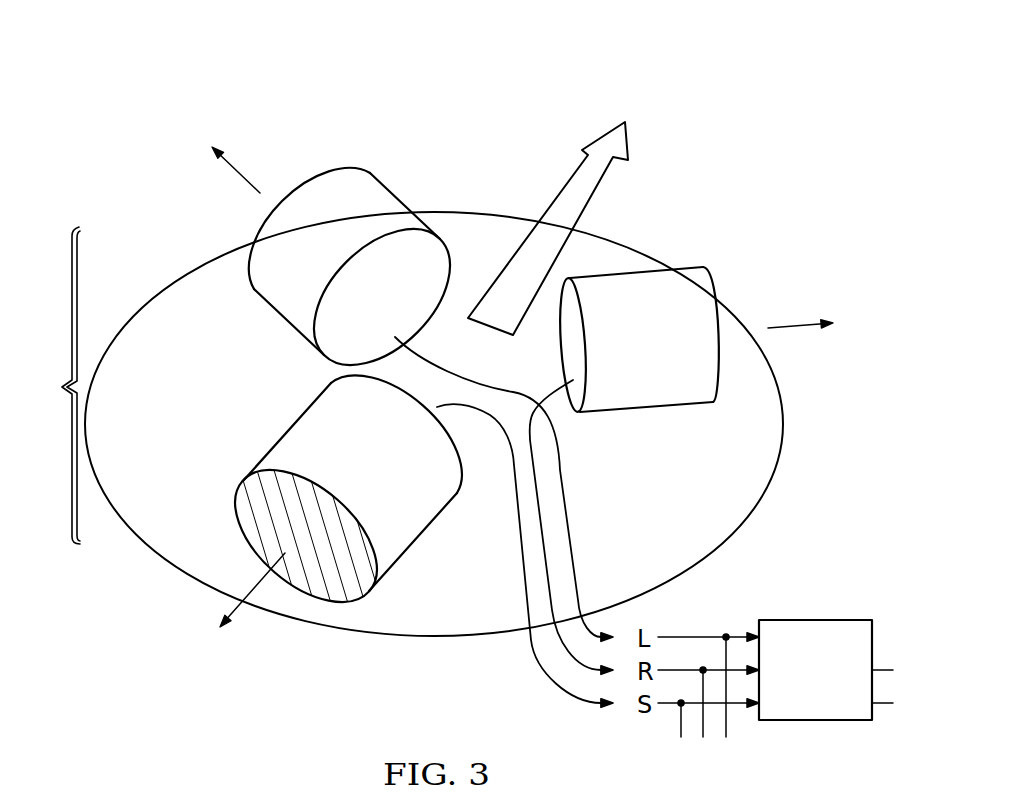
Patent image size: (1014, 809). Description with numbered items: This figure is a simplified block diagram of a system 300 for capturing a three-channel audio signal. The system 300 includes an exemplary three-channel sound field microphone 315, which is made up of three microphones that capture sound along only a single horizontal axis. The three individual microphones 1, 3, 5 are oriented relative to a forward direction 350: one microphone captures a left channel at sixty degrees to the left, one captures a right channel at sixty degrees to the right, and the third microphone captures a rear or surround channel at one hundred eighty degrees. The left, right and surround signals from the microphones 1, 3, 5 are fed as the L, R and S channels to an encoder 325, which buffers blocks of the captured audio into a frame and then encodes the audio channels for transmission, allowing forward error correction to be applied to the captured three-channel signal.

The system 300 is at (238, 60).
The three-channel sound field microphone 315 is at (46, 385).
The left microphone (60°) 1 is at (248, 209).
The right microphone (-60°) 3 is at (722, 272).
The rear microphone (180°) 5 is at (248, 457).
The forward direction 350 is at (682, 92).
The encoder 325 is at (815, 722).